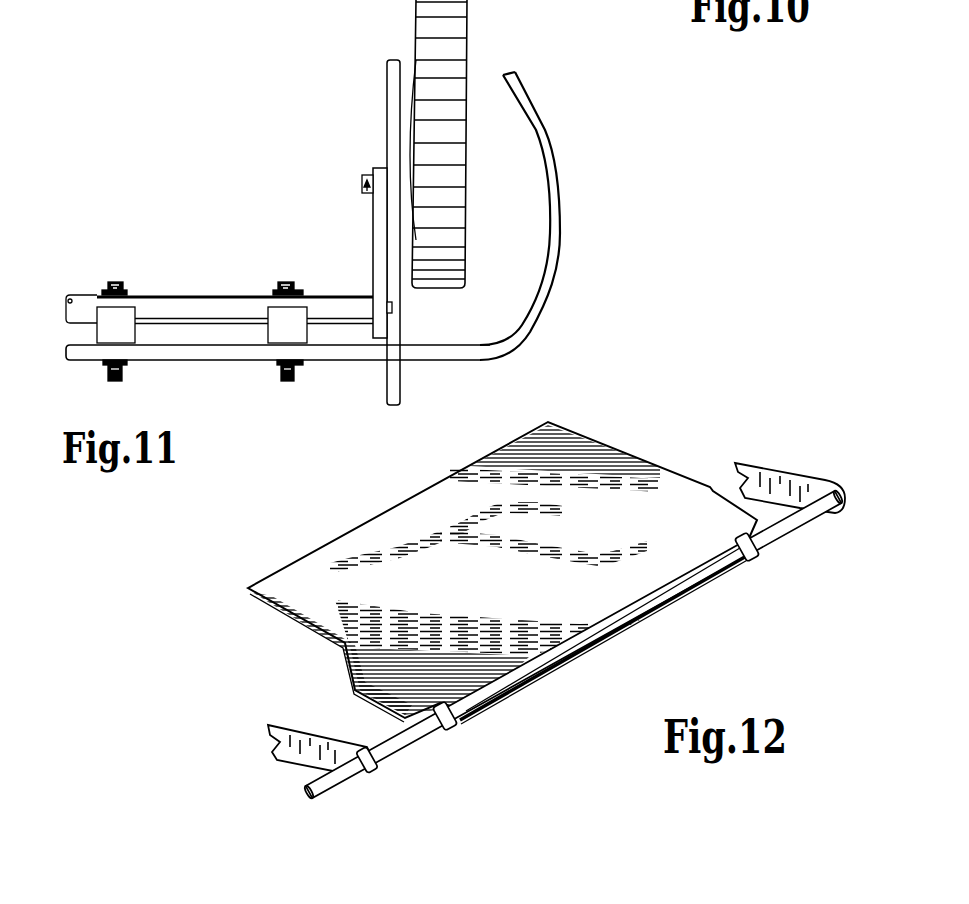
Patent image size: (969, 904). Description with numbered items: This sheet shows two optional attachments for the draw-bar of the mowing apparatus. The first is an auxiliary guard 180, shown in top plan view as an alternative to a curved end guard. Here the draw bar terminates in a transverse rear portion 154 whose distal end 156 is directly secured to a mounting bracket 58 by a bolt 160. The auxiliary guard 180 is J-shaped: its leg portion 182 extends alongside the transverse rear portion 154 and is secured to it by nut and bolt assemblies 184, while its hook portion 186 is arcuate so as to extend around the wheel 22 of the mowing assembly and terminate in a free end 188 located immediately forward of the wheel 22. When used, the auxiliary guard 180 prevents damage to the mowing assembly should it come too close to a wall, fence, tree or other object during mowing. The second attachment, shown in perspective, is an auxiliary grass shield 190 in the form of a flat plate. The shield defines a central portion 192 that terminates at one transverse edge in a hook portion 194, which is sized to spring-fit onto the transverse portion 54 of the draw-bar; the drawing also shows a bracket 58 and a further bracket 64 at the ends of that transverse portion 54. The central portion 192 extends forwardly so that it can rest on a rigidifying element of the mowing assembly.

In FIG. 11, the wheel 22 is at (432, 36).
In FIG. 12, the transverse portion of draw-bar 54 is at (793, 523).
In FIG. 11, the mounting bracket 58 is at (380, 225).
In FIG. 12, the mounting bracket 58 is at (805, 478).
In FIG. 12, the bracket 64 is at (298, 732).
In FIG. 11, the transverse rear portion 154 is at (220, 305).
In FIG. 11, the distal end 156 is at (378, 315).
In FIG. 11, the bolt 160 is at (392, 307).
In FIG. 11, the auxiliary guard 180 is at (573, 277).
In FIG. 11, the leg portion 182 is at (228, 352).
In FIG. 11, the nut and bolt assemblies 184 is at (285, 282).
In FIG. 11, the hook portion 186 is at (557, 173).
In FIG. 11, the free end 188 is at (510, 70).
In FIG. 12, the auxiliary grass shield 190 is at (345, 512).
In FIG. 12, the central portion 192 is at (590, 458).
In FIG. 12, the hook portion 194 is at (615, 625).